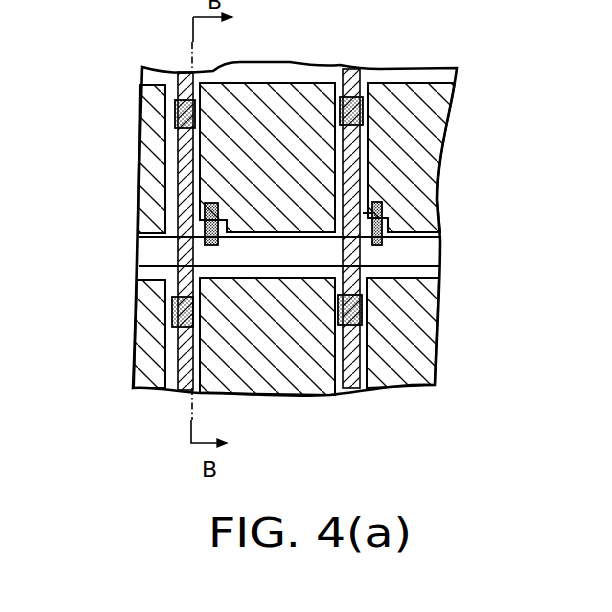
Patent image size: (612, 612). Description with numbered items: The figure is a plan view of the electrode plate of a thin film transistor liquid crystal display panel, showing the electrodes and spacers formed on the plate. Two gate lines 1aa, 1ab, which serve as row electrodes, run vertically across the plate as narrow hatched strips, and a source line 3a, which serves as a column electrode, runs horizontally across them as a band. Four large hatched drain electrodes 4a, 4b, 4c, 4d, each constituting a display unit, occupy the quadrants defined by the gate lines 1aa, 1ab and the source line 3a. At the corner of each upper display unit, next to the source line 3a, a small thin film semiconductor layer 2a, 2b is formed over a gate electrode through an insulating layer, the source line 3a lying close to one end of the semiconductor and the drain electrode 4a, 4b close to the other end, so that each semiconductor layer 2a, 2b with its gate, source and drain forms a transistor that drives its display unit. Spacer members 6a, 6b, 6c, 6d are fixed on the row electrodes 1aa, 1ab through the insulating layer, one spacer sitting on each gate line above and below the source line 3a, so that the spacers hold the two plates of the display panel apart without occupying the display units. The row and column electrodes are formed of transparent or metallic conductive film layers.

The gate line 1aa is at (185, 392).
The gate line 1ab is at (352, 390).
The thin film semiconductor layer 2a is at (204, 213).
The thin film semiconductor layer 2b is at (390, 200).
The source line 3a is at (150, 252).
The drain electrode 4a is at (297, 108).
The drain electrode 4b is at (427, 122).
The drain electrode 4c is at (288, 375).
The drain electrode 4d is at (413, 355).
The spacer member 6a is at (183, 82).
The spacer member 6b is at (351, 82).
The spacer member 6c is at (172, 311).
The spacer member 6d is at (362, 307).